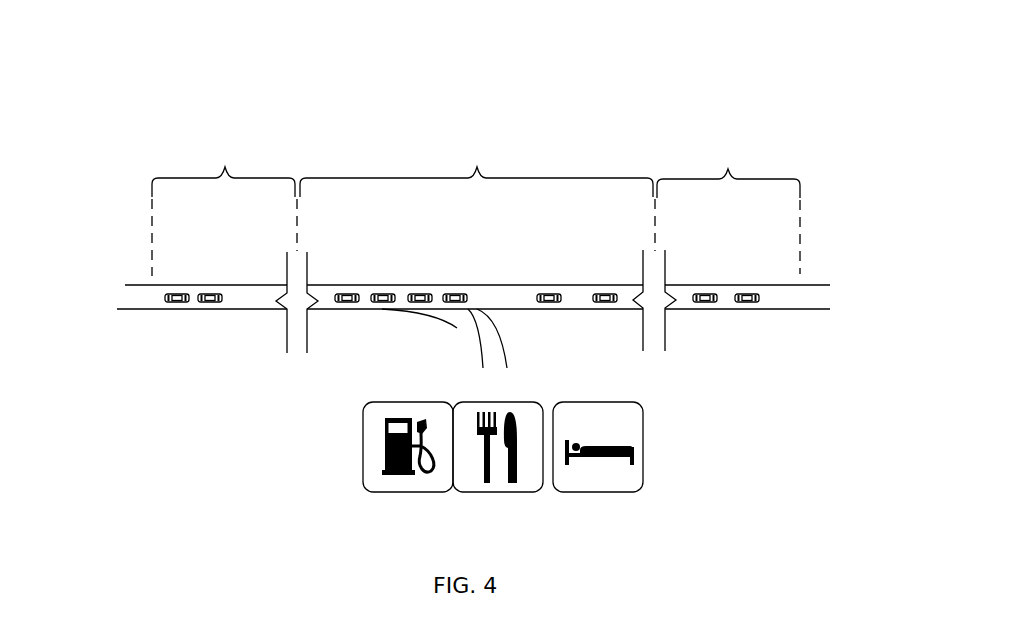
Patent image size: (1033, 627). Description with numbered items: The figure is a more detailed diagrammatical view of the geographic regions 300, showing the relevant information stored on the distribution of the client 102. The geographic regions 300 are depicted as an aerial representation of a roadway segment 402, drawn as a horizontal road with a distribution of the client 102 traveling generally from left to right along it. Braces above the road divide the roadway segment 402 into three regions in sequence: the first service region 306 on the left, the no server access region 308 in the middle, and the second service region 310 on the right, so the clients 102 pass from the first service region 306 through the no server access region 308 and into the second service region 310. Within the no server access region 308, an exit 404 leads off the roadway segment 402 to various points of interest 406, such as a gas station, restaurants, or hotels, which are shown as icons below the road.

The geographic regions 300 is at (220, 62).
The client 102 is at (219, 303).
The first service region 306 is at (225, 168).
The no server access region 308 is at (478, 166).
The second service region 310 is at (728, 171).
The roadway segment 402 is at (140, 276).
The exit 404 is at (457, 328).
The points of interest 406 is at (577, 492).